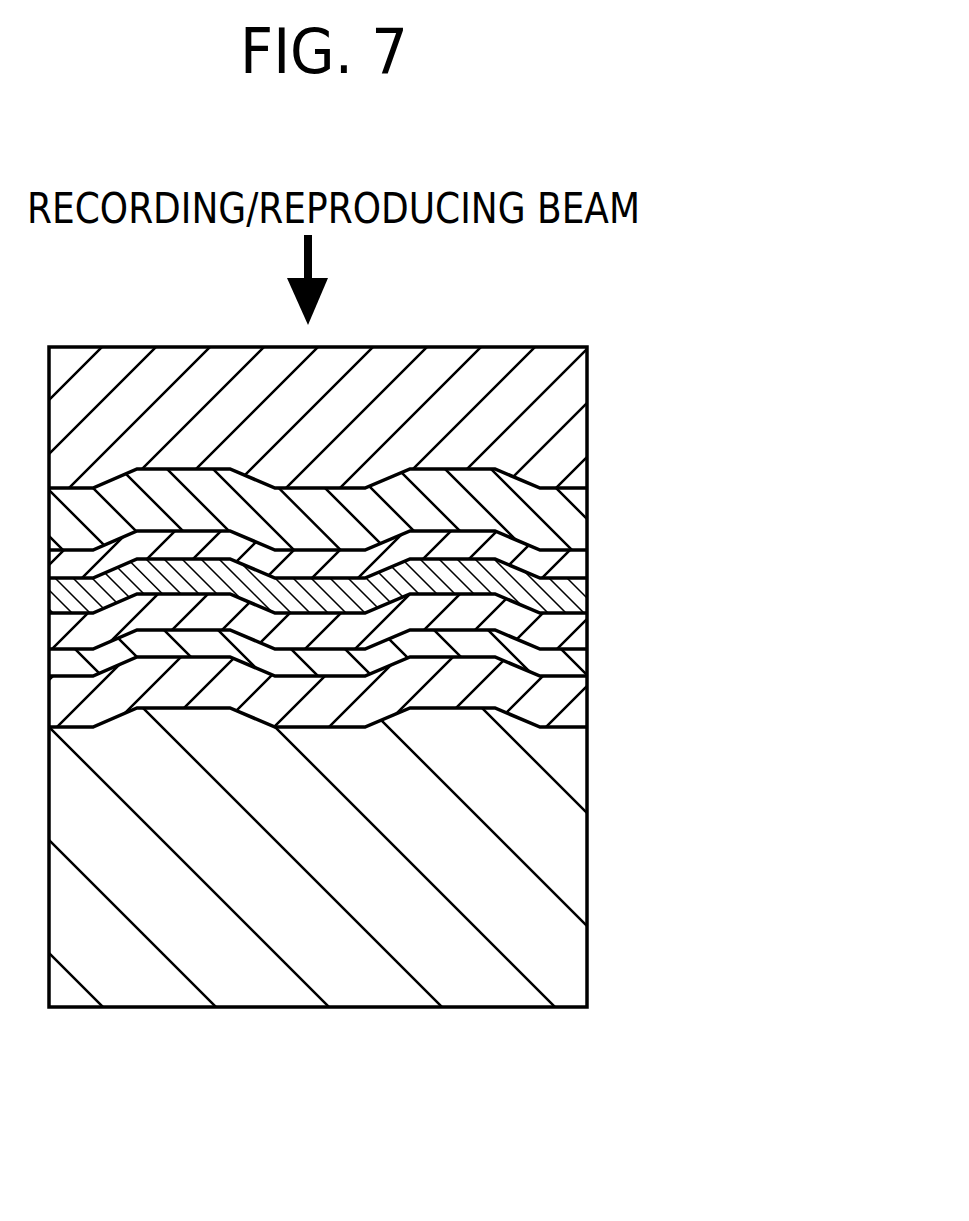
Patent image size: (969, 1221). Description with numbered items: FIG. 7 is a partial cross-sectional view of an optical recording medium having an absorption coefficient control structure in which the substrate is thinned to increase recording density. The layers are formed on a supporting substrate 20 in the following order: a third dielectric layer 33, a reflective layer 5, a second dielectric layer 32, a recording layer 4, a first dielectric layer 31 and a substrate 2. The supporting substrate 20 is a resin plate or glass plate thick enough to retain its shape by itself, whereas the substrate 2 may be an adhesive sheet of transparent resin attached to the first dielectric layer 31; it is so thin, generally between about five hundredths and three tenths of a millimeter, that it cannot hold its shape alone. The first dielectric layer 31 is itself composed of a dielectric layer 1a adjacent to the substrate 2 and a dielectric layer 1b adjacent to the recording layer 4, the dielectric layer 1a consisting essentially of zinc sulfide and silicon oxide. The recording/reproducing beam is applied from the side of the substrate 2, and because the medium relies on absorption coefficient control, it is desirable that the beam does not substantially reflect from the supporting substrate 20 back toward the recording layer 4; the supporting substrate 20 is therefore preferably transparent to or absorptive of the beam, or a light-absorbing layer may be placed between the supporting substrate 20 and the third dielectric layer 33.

The substrate 2 is at (587, 402).
The dielectric layer 1a is at (587, 512).
The dielectric layer 1b is at (587, 558).
The first dielectric layer 31 is at (484, 675).
The recording layer 4 is at (588, 598).
The second dielectric layer 32 is at (588, 625).
The third dielectric layer 33 is at (588, 697).
The reflective layer 5 is at (588, 662).
The supporting substrate 20 is at (578, 842).